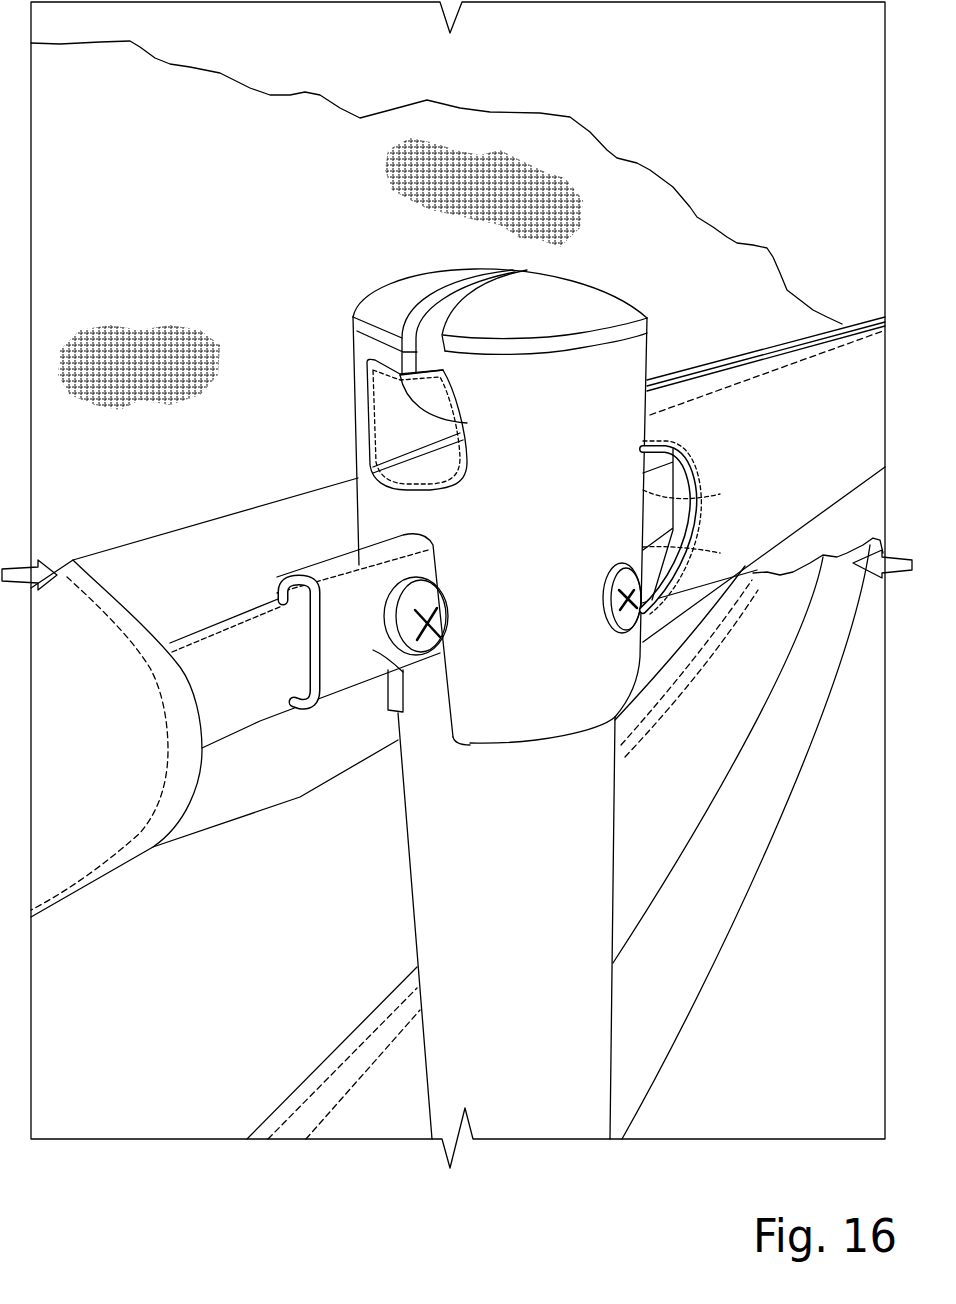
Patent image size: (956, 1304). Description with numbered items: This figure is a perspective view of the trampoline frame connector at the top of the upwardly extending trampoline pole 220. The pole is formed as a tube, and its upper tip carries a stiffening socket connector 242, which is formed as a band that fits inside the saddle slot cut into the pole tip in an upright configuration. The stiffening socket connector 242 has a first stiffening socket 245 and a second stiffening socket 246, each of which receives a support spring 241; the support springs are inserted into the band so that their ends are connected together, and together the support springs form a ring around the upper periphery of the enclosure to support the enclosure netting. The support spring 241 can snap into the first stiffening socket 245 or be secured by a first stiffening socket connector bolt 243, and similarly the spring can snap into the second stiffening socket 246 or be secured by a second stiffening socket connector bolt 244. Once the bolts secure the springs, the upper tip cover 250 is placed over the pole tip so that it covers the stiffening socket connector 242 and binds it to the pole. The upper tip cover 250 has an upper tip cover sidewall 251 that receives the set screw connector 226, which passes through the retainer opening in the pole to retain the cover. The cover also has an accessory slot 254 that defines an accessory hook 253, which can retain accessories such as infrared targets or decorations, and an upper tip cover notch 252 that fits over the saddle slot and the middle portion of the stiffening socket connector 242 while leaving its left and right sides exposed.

The post 220 is at (500, 915).
The set screw connector 226 is at (630, 613).
The support spring 241 is at (227, 673).
The stiffening socket connector 242 is at (337, 595).
The first stiffening socket connector bolt 243 is at (395, 652).
The second stiffening socket connector bolt 244 is at (693, 500).
The first stiffening socket 245 is at (316, 700).
The second stiffening socket 246 is at (690, 550).
The upper tip cover 250 is at (598, 303).
The upper tip cover sidewall 251 is at (540, 727).
The upper tip cover notch 252 is at (447, 708).
The accessory hook 253 is at (462, 422).
The accessory slot 254 is at (442, 310).